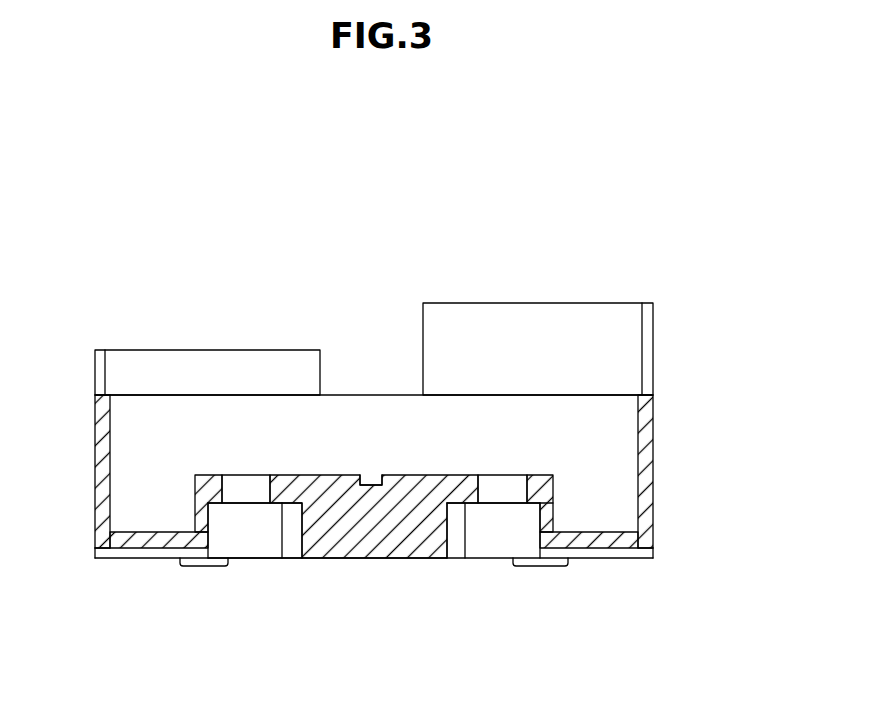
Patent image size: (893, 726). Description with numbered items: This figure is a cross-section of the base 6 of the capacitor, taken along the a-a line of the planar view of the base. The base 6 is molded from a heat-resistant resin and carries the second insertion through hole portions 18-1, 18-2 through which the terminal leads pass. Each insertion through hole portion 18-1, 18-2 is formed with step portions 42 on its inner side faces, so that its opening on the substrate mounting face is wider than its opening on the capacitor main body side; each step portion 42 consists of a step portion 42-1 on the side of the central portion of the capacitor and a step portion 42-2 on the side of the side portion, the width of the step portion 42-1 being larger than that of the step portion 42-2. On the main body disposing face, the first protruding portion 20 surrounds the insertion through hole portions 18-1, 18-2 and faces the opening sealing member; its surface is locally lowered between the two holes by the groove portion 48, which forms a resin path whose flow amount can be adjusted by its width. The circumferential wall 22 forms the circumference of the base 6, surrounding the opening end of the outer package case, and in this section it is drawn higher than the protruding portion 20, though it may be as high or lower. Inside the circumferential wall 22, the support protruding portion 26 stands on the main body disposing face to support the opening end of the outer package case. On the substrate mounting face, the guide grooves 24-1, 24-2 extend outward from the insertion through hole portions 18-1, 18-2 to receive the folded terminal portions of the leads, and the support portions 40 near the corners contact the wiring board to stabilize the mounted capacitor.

The base 6 is at (653, 677).
The second insertion through hole portion 18-1 is at (218, 503).
The second insertion through hole portion 18-2 is at (481, 500).
The first protruding portion 20 is at (545, 476).
The circumferential wall 22 is at (654, 399).
The guide groove 24-1 is at (122, 548).
The guide groove 24-2 is at (604, 548).
The support protruding portion 26 is at (598, 532).
The support portion 40 is at (542, 566).
The step portion 42 is at (308, 630).
The step portion 42-1 is at (277, 505).
The step portion 42-2 is at (222, 508).
The groove portion 48 is at (370, 480).